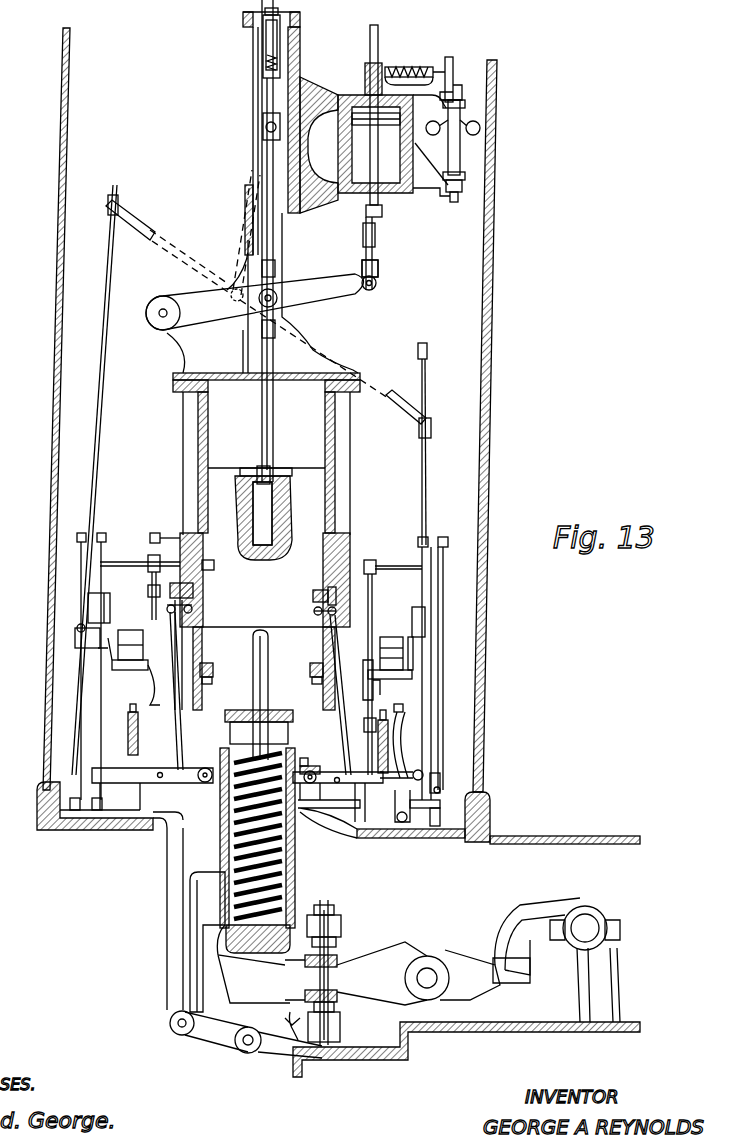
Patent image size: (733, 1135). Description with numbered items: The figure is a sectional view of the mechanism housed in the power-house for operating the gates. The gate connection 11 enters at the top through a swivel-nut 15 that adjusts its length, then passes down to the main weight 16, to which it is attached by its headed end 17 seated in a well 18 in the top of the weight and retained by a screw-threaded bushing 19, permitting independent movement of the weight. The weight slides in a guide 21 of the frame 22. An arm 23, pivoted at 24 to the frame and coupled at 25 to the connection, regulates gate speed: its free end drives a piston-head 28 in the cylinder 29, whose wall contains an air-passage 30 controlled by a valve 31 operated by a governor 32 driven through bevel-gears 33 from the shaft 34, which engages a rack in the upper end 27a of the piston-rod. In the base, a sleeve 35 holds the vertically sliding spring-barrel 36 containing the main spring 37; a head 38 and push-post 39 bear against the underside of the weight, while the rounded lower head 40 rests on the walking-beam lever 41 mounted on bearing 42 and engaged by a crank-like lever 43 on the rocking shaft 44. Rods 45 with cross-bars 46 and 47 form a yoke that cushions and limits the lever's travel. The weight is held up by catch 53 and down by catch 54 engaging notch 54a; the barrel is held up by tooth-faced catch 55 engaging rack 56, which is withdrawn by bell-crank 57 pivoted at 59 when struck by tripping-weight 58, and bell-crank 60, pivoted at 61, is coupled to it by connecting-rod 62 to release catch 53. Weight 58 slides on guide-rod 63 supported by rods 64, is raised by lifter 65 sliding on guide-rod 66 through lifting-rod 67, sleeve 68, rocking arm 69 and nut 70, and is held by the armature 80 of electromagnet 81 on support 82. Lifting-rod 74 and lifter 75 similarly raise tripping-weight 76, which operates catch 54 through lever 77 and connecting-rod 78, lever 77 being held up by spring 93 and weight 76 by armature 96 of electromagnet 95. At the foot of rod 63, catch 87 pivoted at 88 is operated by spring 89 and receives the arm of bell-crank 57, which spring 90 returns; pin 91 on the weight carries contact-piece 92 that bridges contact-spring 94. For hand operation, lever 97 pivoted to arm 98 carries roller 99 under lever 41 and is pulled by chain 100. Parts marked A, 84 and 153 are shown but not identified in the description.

The casing A is at (493, 298).
The gate connection 11 is at (274, 12).
The swivel-nut 15 is at (263, 53).
The main weight 16 is at (261, 580).
The headed end 17 is at (282, 497).
The socket or well 18 is at (258, 525).
The screw-threaded bushing 19 is at (270, 470).
The guide 21 is at (325, 580).
The frame 22 is at (185, 414).
The arm 23 is at (313, 290).
The pivot 24 is at (160, 310).
The coupling 25 is at (273, 292).
The upper end of piston-rod 27a is at (370, 47).
The piston-head 28 is at (354, 122).
The cylinder 29 is at (375, 128).
The air-passage 30 is at (462, 176).
The valve 31 is at (418, 141).
The governor 32 is at (460, 160).
The bevel-gears 33 is at (455, 82).
The shaft 34 is at (402, 66).
The sleeve 35 is at (300, 845).
The spring-barrel 36 is at (296, 897).
The main spring 37 is at (240, 880).
The head 38 is at (232, 712).
The push-post 39 is at (268, 695).
The thickened and rounded head 40 is at (220, 945).
The walking-beam lever 41 is at (396, 958).
The base or bearing 42 is at (430, 982).
The crank-like lever 43 is at (528, 918).
The rocking shaft 44 is at (600, 920).
The bolts or rods 45 is at (332, 970).
The cross-bar 46 is at (336, 1040).
The cross-bar 47 is at (336, 925).
The catch 53 is at (313, 595).
The catch 54 is at (196, 596).
The notch 54a is at (214, 566).
The tooth-faced catch 55 is at (298, 762).
The ratchet-toothed rack 56 is at (312, 825).
The bell-crank lever 57 is at (350, 790).
The tripping-weight 58 is at (426, 618).
The pivot 59 is at (330, 783).
The bell-crank lever 60 is at (330, 640).
The pivot 61 is at (314, 612).
The connecting-rod 62 is at (341, 670).
The guide-rod 63 is at (433, 576).
The arms or rods 64 is at (382, 564).
The lifter 65 is at (440, 790).
The guide-rod 66 is at (442, 690).
The lifting-rod 67 is at (427, 493).
The sleeve 68 is at (431, 430).
The rocking arm 69 is at (398, 405).
The head or nut 70 is at (428, 352).
The lifting-rod 74 is at (99, 356).
The lifter 75 is at (78, 640).
The tripping-weight 76 is at (92, 603).
The lever 77 is at (125, 783).
The connecting-rod 78 is at (168, 700).
The pivoted armature 80 is at (413, 652).
The electromagnet 81 is at (387, 640).
The support 82 is at (380, 682).
The rod 84 is at (369, 662).
The catch 87 is at (406, 732).
The pivot 88 is at (401, 823).
The spring 89 is at (404, 772).
The spring 90 is at (412, 745).
The pin 91 is at (158, 530).
The movable contact-piece 92 is at (150, 536).
The spring 93 is at (127, 738).
The contact-spring 94 is at (150, 560).
The electromagnet 95 is at (132, 635).
The pivotal armature 96 is at (108, 652).
The lever 97 is at (207, 1037).
The downwardly-projecting arm 98 is at (178, 935).
The roller 99 is at (248, 1054).
The chain 100 is at (290, 1042).
The nut 153 is at (213, 668).